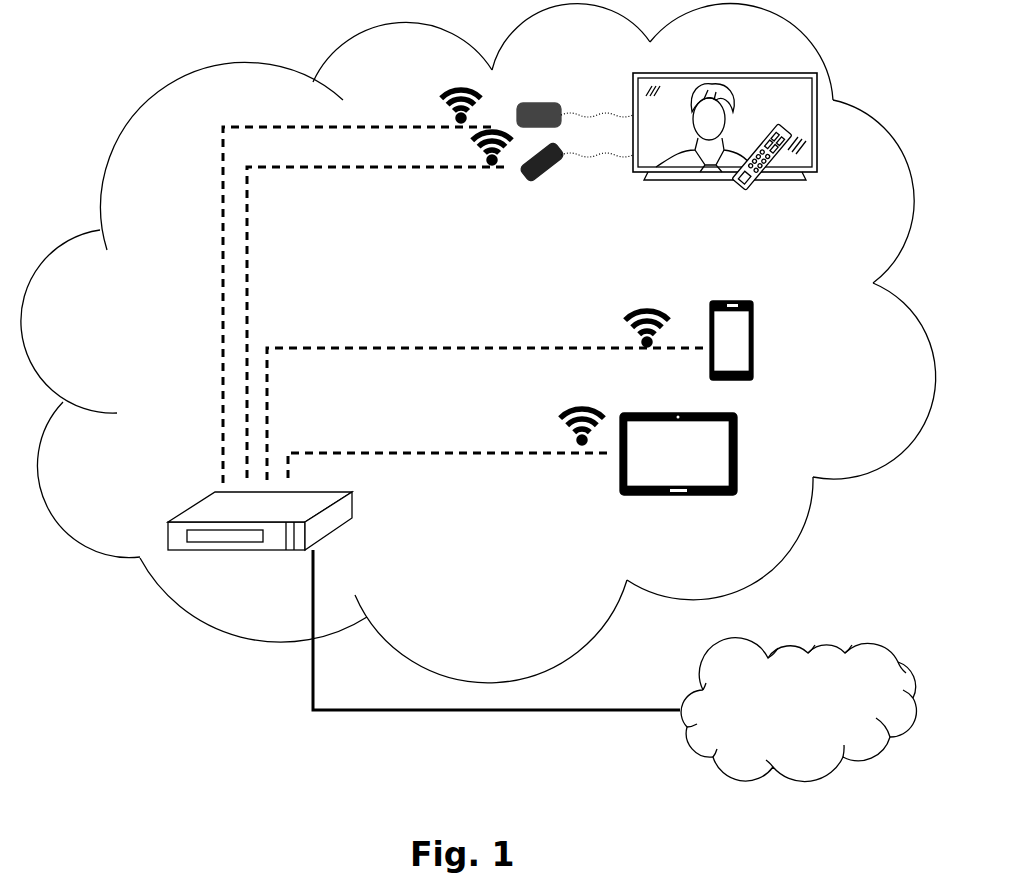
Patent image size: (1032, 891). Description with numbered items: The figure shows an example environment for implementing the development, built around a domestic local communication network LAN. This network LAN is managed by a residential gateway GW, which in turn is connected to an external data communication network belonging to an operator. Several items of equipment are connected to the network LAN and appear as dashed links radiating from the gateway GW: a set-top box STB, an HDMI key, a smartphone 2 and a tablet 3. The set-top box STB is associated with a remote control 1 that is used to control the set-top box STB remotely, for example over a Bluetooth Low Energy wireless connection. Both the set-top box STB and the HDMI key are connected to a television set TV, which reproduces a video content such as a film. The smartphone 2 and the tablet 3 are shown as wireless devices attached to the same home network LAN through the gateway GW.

The local communication network LAN is at (243, 62).
The set-top box STB is at (532, 103).
The television set TV is at (773, 73).
The remote control 1 is at (730, 181).
The smartphone 2 is at (755, 305).
The tablet 3 is at (633, 494).
The residential gateway GW is at (354, 520).